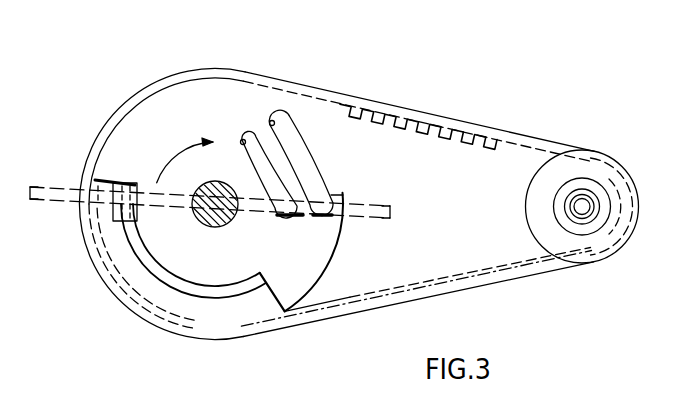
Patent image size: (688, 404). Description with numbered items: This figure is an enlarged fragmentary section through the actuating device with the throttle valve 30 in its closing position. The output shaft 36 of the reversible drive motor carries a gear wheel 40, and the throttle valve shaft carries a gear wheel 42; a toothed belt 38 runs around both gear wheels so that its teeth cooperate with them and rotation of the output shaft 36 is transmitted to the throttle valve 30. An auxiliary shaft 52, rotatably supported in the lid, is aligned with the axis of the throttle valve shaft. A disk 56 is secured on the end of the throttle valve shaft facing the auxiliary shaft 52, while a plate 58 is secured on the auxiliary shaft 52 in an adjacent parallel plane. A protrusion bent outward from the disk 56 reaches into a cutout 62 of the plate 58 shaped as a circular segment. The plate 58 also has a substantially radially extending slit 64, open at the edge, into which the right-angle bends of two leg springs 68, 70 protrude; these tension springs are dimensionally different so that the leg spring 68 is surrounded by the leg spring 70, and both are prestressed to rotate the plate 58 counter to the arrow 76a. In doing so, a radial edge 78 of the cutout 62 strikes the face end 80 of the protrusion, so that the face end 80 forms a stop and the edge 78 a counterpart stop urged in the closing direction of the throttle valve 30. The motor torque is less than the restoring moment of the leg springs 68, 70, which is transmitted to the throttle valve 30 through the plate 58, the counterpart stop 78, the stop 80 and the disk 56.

The throttle valve 30 is at (44, 200).
The output shaft 36 is at (583, 210).
The toothed belt 38 is at (380, 113).
The gear wheel of the output shaft 40 is at (548, 172).
The gear wheel of the throttle valve shaft 42 is at (137, 298).
The auxiliary shaft 52 is at (223, 225).
The disk 56 is at (225, 294).
The plate 58 is at (221, 92).
The cutout 62 is at (187, 284).
The slit 64 is at (338, 193).
The leg spring 68 is at (254, 138).
The leg spring 70 is at (287, 132).
The arrow 76a is at (157, 182).
The radial edge of the cutout 78 is at (105, 181).
The face end of the protrusion 80 is at (128, 183).